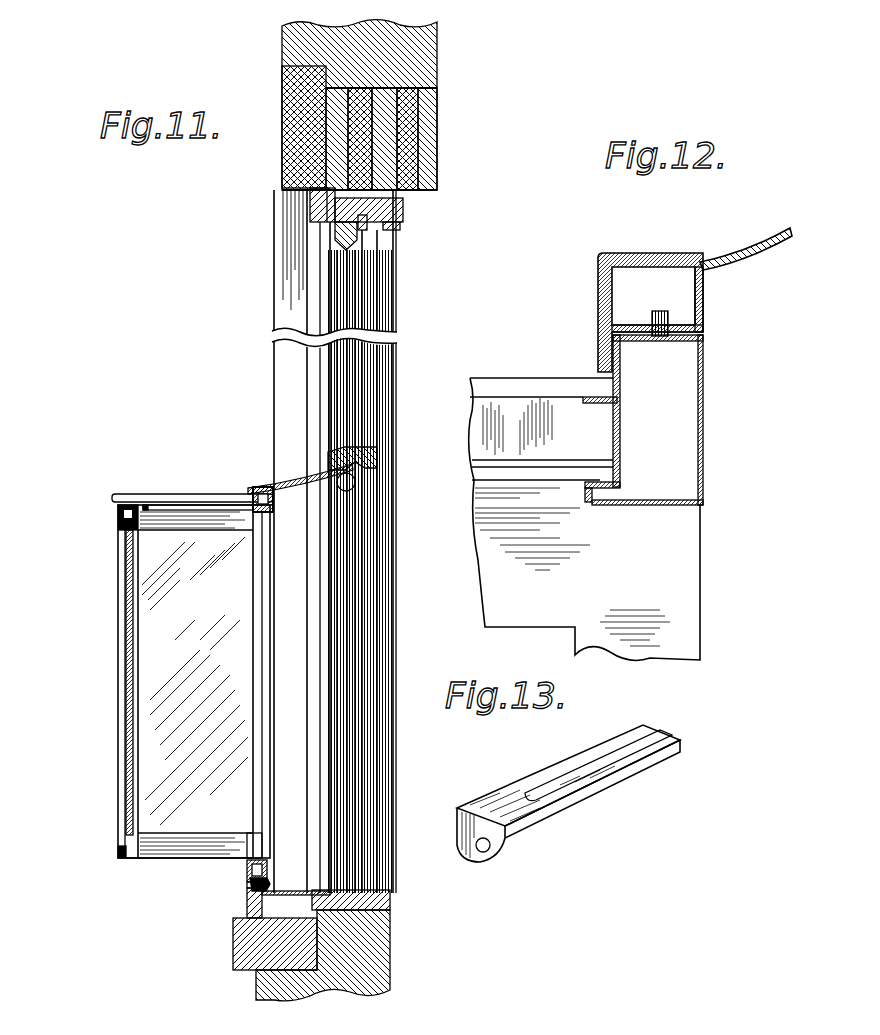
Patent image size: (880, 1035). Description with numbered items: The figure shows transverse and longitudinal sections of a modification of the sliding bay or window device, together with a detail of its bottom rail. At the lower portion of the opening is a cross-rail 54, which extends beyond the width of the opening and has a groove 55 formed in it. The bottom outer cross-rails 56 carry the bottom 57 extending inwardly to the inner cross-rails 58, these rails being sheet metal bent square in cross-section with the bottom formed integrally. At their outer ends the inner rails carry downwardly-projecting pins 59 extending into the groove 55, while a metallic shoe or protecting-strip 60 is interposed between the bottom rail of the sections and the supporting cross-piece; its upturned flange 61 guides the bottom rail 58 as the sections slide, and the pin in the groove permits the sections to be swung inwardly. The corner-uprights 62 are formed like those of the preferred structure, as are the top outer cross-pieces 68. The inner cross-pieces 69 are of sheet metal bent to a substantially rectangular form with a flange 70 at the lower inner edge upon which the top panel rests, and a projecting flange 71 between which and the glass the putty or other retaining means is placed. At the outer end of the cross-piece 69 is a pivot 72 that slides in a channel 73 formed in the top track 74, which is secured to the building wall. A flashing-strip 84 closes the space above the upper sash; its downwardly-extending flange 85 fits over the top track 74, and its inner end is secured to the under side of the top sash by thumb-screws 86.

In FIG. 11, the cross-rail 54 is at (247, 913).
In FIG. 11, the groove 55 is at (260, 892).
In FIG. 11, the bottom outer cross-rail 56 is at (118, 853).
In FIG. 11, the bottom 57 is at (160, 862).
In FIG. 11, the inner cross-rail 58 is at (266, 870).
In FIG. 11, the downwardly-projecting pin 59 is at (246, 882).
In FIG. 11, the metallic shoe or protecting-strip 60 is at (268, 878).
In FIG. 13, the metallic shoe or protecting-strip 60 is at (515, 822).
In FIG. 11, the upturned flange 61 is at (243, 857).
In FIG. 11, the corner-upright 62 is at (118, 538).
In FIG. 11, the top outer cross-piece 68 is at (118, 510).
In FIG. 11, the inner cross-piece 69 is at (265, 512).
In FIG. 12, the inner cross-piece 69 is at (680, 438).
In FIG. 11, the flange 70 is at (255, 513).
In FIG. 12, the flange 70 is at (594, 497).
In FIG. 12, the projecting flange 71 is at (586, 397).
In FIG. 12, the pivot 72 is at (669, 320).
In FIG. 12, the channel 73 is at (670, 331).
In FIG. 11, the top track 74 is at (270, 490).
In FIG. 12, the top track 74 is at (712, 276).
In FIG. 11, the flashing-strip 84 is at (292, 476).
In FIG. 12, the flashing-strip 84 is at (718, 252).
In FIG. 11, the downwardly-extending flange 85 is at (258, 487).
In FIG. 12, the downwardly-extending flange 85 is at (598, 290).
In FIG. 11, the thumb-screw 86 is at (347, 491).